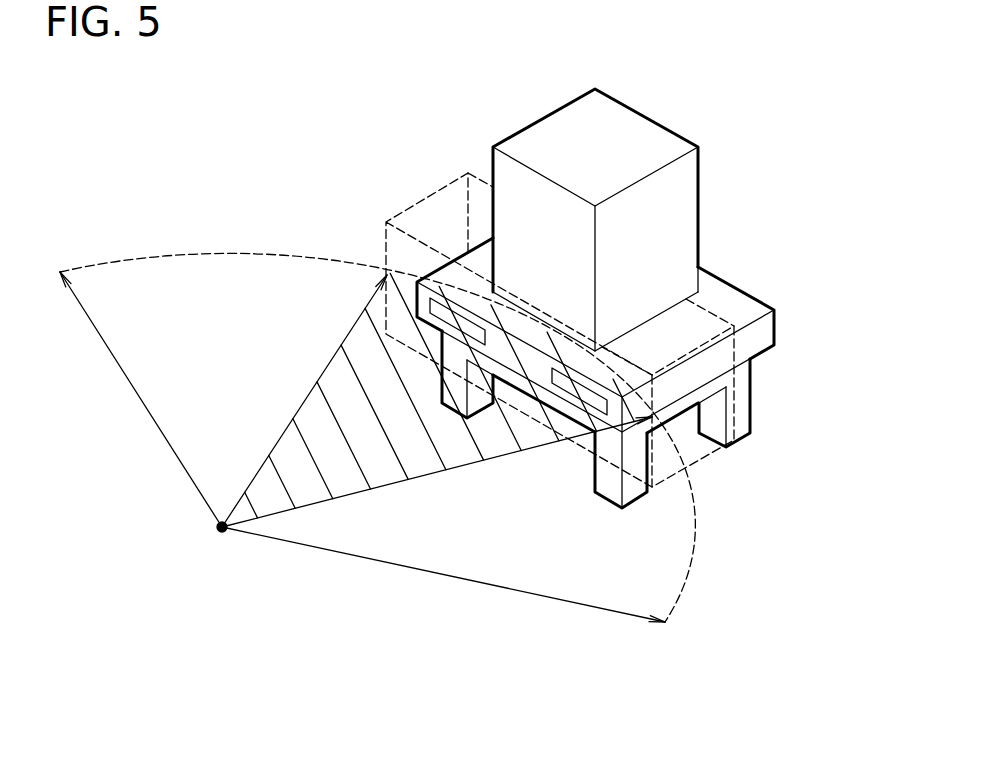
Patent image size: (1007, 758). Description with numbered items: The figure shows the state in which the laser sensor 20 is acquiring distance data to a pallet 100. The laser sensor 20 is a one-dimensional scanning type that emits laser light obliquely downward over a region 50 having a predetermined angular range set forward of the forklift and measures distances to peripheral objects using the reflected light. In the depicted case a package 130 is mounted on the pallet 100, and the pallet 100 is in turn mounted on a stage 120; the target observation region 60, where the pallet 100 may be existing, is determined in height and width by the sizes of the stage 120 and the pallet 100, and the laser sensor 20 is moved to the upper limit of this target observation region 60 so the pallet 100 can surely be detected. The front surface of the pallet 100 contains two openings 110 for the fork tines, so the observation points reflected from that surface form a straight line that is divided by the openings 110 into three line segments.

The laser sensor 20 is at (223, 535).
The region 50 is at (693, 527).
The target observation region 60 is at (413, 238).
The pallet 100 is at (750, 292).
The openings 110 is at (473, 333).
The stage 120 is at (738, 415).
The package 130 is at (627, 135).